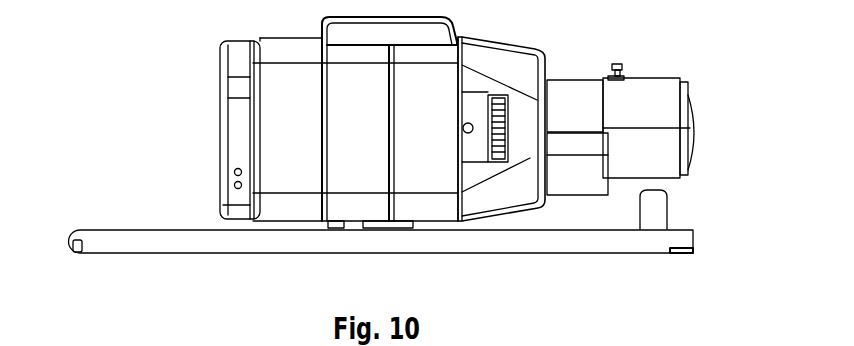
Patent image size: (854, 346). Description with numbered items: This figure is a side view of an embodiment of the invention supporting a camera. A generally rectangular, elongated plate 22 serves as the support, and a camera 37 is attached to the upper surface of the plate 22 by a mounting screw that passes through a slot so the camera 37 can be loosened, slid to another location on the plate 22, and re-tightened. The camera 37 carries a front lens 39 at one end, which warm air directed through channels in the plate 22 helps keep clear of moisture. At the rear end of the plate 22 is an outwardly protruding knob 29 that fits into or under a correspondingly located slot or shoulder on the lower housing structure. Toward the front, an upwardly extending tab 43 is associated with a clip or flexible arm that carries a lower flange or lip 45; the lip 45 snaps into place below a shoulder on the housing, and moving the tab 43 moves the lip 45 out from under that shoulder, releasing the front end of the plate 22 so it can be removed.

The plate 22 is at (485, 245).
The knobs 29 is at (77, 249).
The camera 37 is at (490, 60).
The front lens 39 is at (695, 130).
The tab 43 is at (657, 208).
The lower flange or lip 45 is at (680, 253).